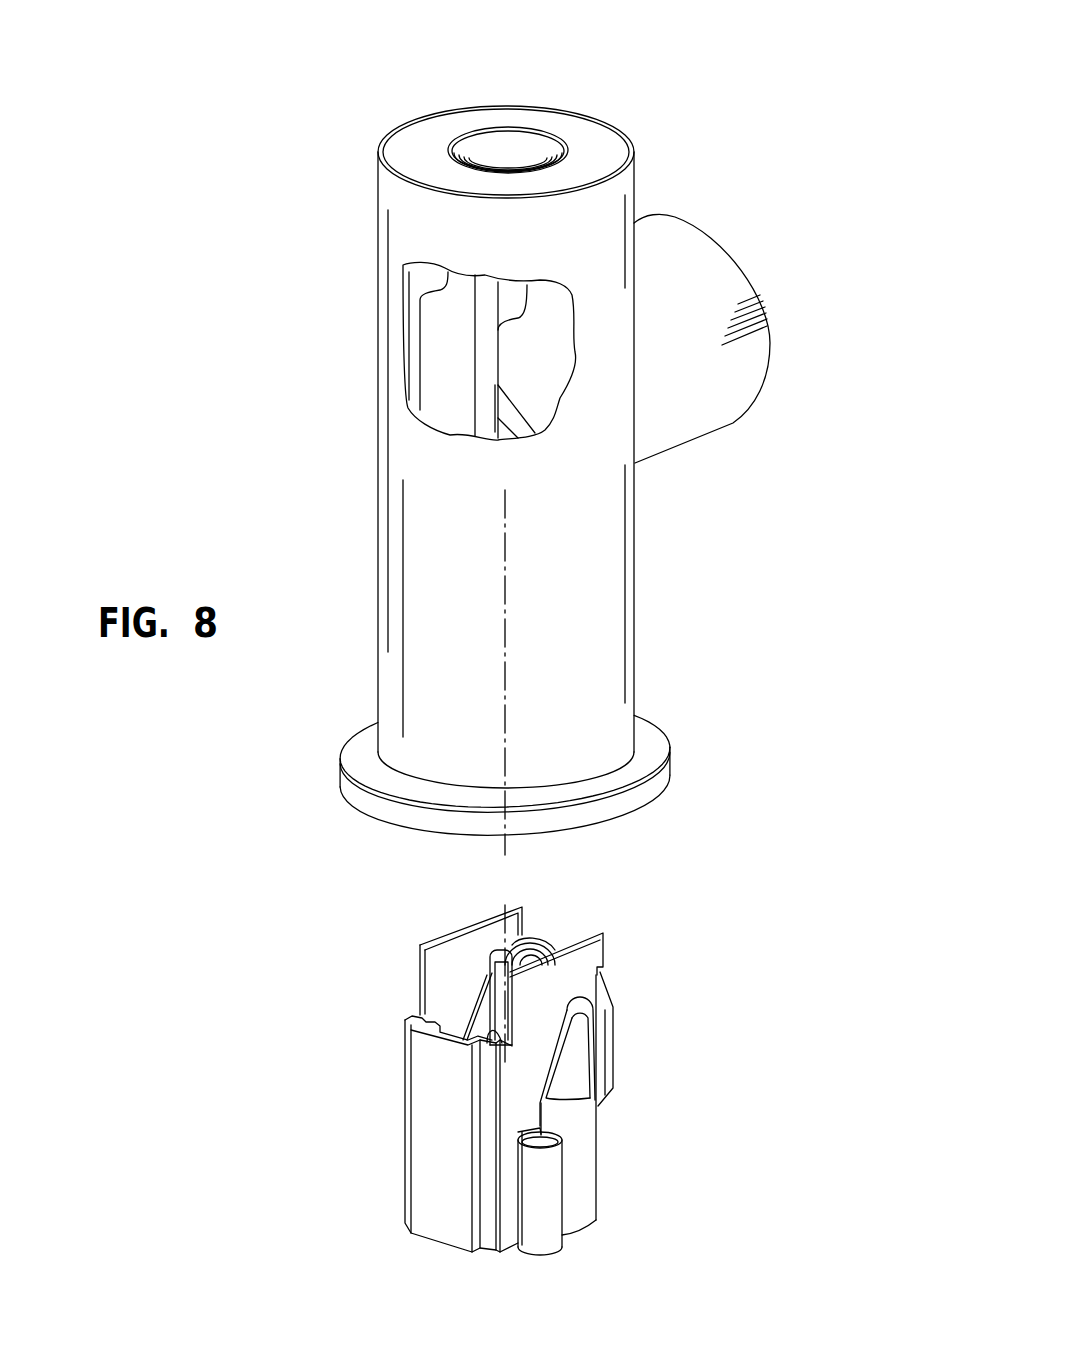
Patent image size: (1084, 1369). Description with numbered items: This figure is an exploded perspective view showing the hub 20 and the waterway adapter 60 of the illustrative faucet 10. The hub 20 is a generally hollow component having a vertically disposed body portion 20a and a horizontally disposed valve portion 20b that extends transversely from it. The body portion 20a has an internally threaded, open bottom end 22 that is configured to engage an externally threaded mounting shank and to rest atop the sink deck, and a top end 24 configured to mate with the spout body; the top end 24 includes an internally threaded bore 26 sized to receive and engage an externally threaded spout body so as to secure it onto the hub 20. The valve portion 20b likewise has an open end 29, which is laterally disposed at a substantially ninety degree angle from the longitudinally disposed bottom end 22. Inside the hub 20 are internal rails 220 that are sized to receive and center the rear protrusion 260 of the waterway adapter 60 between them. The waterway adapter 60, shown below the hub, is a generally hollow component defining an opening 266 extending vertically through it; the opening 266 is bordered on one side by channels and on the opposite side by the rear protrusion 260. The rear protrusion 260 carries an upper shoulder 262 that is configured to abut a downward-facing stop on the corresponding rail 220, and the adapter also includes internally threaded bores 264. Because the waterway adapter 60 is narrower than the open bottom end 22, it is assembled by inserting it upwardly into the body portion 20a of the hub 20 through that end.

The faucet 10 is at (724, 122).
The hub 20 is at (400, 466).
The body portion 20a is at (380, 215).
The valve portion 20b is at (713, 260).
The bottom end 22 is at (360, 806).
The top end 24 is at (418, 147).
The internally threaded bore 26 is at (533, 136).
The open end 29 is at (768, 350).
The internal rails 220 is at (415, 338).
The waterway adapter 60 is at (370, 1043).
The rear protrusion 260 is at (430, 1148).
The upper shoulder 262 is at (417, 1015).
The internally threaded bores 264 is at (556, 1263).
The opening 266 is at (450, 976).